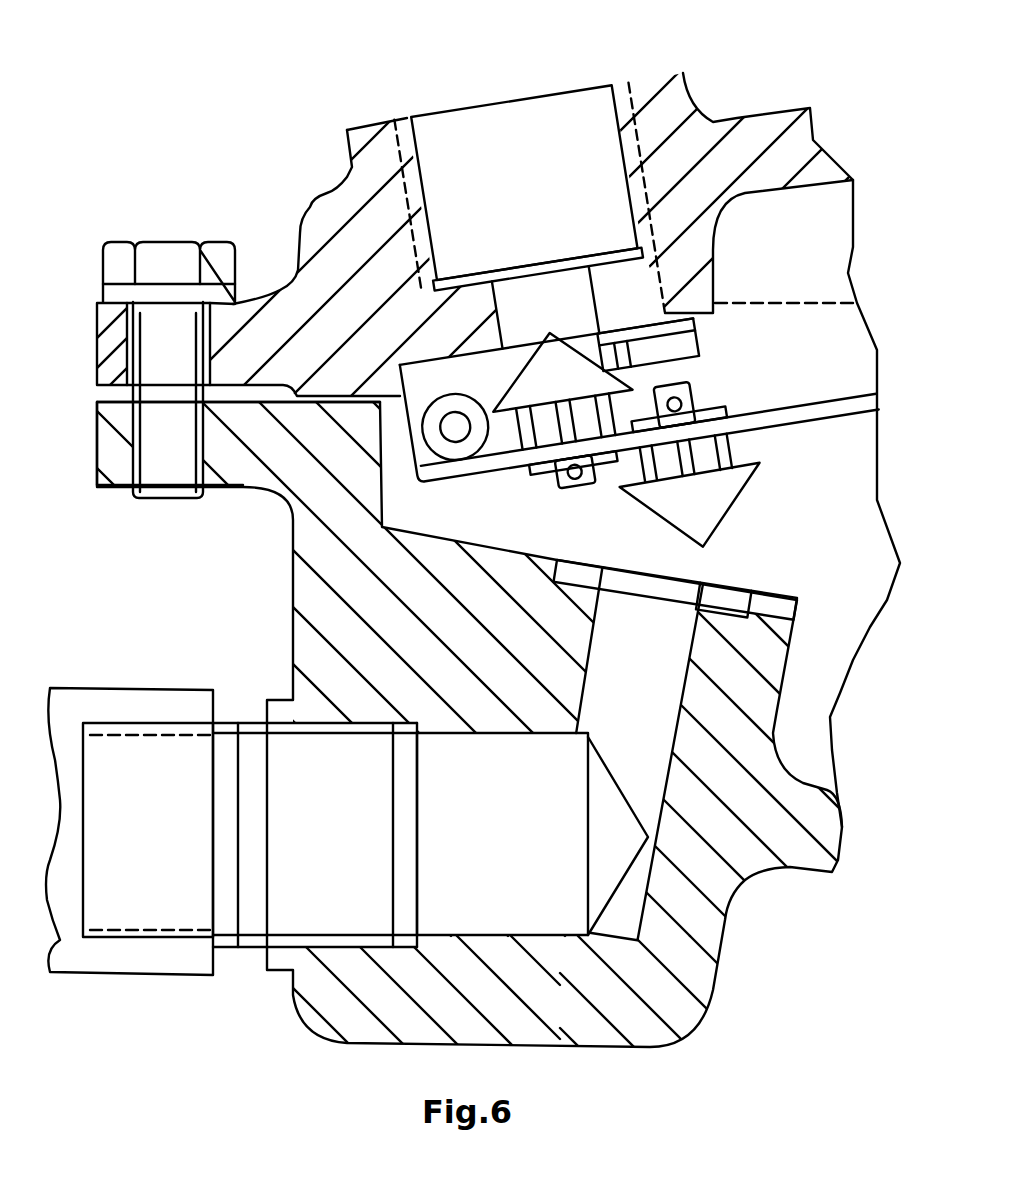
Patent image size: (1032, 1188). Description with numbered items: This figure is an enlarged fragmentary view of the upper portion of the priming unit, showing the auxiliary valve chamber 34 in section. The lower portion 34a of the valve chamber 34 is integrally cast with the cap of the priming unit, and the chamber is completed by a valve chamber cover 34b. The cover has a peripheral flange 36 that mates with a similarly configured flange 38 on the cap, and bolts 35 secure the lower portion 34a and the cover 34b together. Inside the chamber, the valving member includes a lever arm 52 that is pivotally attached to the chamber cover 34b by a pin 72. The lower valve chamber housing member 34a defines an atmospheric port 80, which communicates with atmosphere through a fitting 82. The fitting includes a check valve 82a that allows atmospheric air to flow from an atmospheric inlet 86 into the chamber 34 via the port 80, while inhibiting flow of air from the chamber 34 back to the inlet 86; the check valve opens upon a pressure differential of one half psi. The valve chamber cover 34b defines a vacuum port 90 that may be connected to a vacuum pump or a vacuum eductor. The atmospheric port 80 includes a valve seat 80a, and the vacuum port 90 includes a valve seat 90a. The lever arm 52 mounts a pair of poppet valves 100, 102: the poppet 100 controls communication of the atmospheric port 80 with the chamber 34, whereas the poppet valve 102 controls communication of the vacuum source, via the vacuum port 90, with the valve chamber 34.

The auxiliary valve chamber 34 is at (771, 256).
The lower portion of the valve chamber 34a is at (505, 726).
The valve chamber cover 34b is at (742, 147).
The bolts 35 is at (168, 256).
The peripheral flange 36 is at (108, 350).
The flange 38 is at (108, 457).
The lever arm 52 is at (810, 420).
The pin 72 is at (457, 428).
The atmospheric port 80 is at (605, 693).
The valve seat 80a is at (730, 598).
The fitting 82 is at (222, 1038).
The check valve 82a is at (445, 855).
The atmospheric inlet 86 is at (93, 708).
The vacuum port 90 is at (427, 167).
The valve seat 90a is at (693, 358).
The poppet valve 100 is at (680, 504).
The poppet valve 102 is at (542, 390).